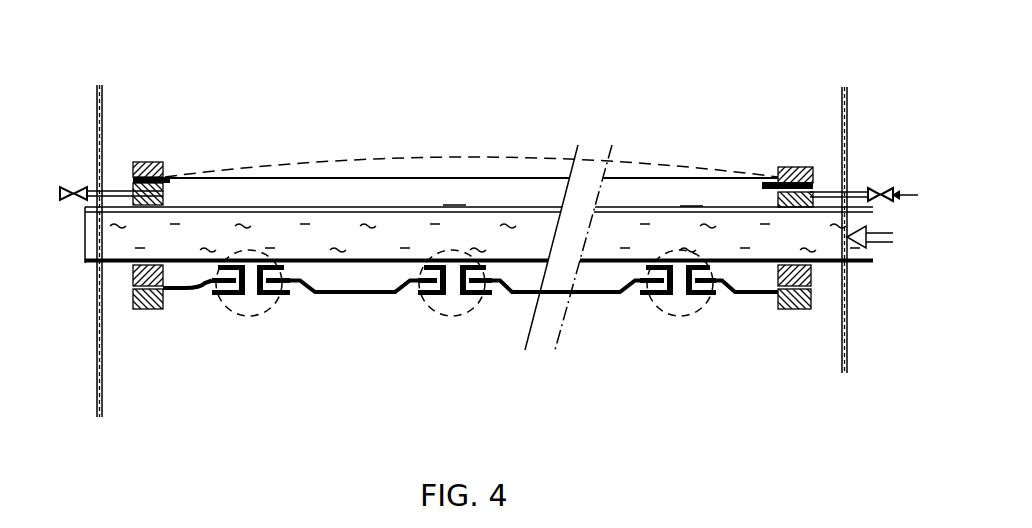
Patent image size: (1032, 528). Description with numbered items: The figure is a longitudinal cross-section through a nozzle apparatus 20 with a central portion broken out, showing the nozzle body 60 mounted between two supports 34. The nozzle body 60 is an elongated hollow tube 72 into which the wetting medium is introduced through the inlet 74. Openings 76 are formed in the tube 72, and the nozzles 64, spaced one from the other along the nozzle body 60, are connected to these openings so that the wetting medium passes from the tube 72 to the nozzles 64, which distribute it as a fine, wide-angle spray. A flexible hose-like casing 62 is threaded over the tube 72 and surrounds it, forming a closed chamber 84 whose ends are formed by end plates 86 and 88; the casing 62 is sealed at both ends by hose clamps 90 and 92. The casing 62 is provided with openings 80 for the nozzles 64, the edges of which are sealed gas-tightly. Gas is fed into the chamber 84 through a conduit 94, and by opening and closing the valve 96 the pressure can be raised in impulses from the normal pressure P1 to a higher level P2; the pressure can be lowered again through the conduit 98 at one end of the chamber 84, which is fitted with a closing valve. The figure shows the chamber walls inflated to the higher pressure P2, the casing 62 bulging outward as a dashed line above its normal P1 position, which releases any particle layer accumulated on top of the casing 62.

The apparatus 20 is at (556, 118).
The support post 34 is at (103, 120).
The nozzle body 60 is at (630, 196).
The flexible hose-like casing 62 is at (252, 180).
The nozzles 64 is at (228, 326).
The tube 72 is at (302, 212).
The inlet 74 is at (855, 252).
The openings 76 is at (254, 262).
The openings 80 is at (250, 290).
The closed chamber 84 is at (696, 195).
The end plate 86 is at (133, 282).
The end plate 88 is at (777, 298).
The hose clamp 90 is at (160, 310).
The hose clamp 92 is at (807, 314).
The conduit 94 is at (860, 192).
The valve 96 is at (878, 192).
The conduit 98 is at (87, 192).
The normal pressure P1 is at (458, 194).
The higher pressure P2 is at (458, 162).